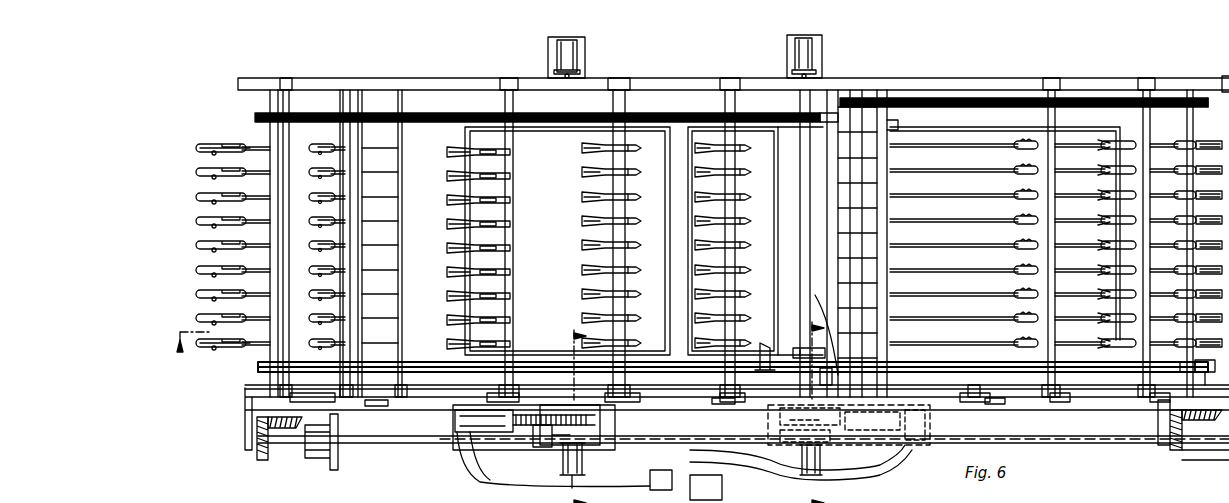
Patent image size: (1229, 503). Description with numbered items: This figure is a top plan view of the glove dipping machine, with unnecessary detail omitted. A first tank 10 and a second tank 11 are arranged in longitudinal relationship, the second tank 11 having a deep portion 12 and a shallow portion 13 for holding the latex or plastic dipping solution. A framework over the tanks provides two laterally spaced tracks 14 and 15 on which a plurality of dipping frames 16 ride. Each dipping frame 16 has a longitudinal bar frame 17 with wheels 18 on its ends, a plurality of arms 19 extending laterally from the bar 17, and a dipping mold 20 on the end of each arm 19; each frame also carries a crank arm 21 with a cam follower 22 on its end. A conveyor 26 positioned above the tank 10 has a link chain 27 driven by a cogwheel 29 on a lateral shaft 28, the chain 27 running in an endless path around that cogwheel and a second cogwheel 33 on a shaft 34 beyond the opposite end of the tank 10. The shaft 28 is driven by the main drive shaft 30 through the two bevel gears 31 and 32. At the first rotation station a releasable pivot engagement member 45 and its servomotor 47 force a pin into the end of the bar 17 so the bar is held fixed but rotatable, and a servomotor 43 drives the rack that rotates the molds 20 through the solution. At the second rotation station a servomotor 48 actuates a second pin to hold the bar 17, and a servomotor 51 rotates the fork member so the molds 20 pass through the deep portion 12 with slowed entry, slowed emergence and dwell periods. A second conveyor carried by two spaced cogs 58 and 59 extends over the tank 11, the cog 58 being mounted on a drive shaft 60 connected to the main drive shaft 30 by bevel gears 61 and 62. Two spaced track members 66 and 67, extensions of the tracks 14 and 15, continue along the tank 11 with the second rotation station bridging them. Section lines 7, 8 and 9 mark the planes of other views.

The section line 7 is at (191, 352).
The section line 8 is at (572, 409).
The section line 9 is at (811, 405).
The tank 10 is at (458, 152).
The second tank 11 is at (705, 128).
The deep portion 12 is at (792, 243).
The shallow portion 13 is at (1030, 345).
The track 14 is at (436, 386).
The track 15 is at (650, 80).
The dipping frame 16 is at (250, 146).
The longitudinal bar frame 17 is at (292, 155).
The wheels 18 is at (405, 80).
The arms 19 is at (250, 347).
The dipping mold 20 is at (205, 266).
The crank arm 21 is at (402, 398).
The cam follower 22 is at (388, 402).
The conveyor 26 is at (328, 366).
The link chain 27 is at (657, 366).
The shaft 28 is at (262, 364).
The cogwheel 29 is at (268, 378).
The main drive shaft 30 is at (388, 444).
The bevel gear 31 is at (265, 462).
The bevel gear 32 is at (290, 432).
The second cogwheel 33 is at (797, 348).
The shaft 34 is at (762, 345).
The servomotor 43 is at (478, 440).
The releasable pivot engagement member 45 is at (563, 462).
The servomotor 47 is at (556, 445).
The servomotor 48 is at (820, 462).
The servomotor 51 is at (900, 447).
The cog 58 is at (1207, 368).
The cog 59 is at (820, 330).
The drive shaft 60 is at (1183, 356).
The bevel gear 61 is at (1172, 452).
The bevel gear 62 is at (1200, 422).
The track member 66 is at (1083, 393).
The track member 67 is at (998, 80).